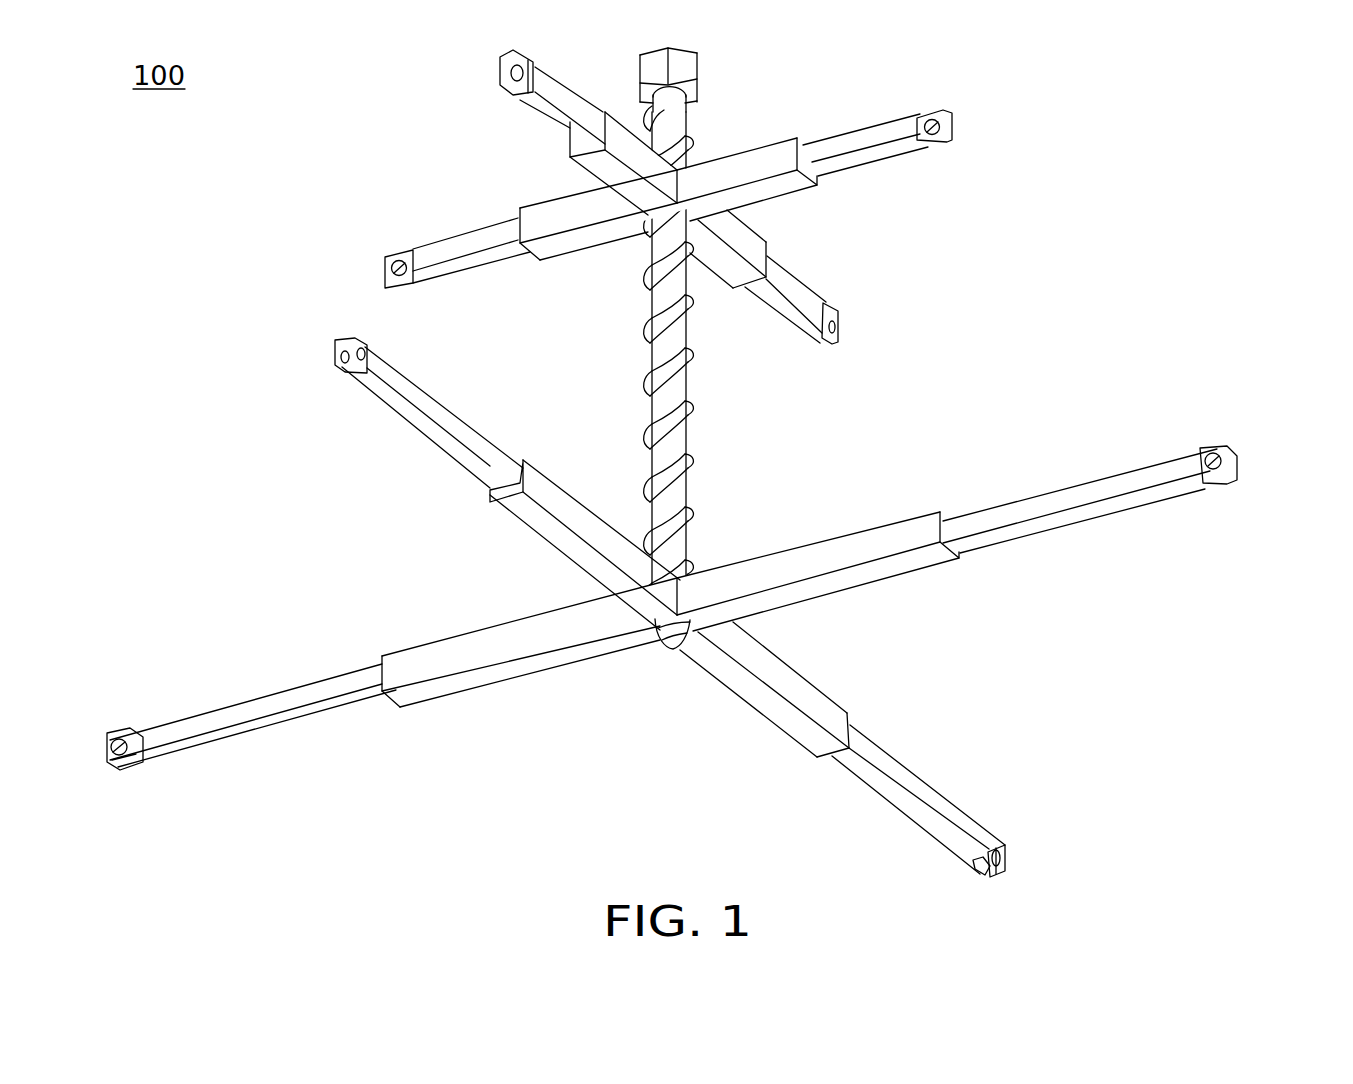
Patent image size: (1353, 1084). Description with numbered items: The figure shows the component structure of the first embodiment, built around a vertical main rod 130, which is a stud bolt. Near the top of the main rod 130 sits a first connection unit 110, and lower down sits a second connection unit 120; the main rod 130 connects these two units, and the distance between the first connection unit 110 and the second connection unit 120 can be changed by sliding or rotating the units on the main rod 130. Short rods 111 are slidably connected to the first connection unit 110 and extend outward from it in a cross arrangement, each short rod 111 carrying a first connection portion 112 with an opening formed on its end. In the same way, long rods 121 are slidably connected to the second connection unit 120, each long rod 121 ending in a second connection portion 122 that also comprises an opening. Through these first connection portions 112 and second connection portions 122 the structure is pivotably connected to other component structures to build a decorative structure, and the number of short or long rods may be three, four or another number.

The first connection unit 110 is at (757, 175).
The short rods 111 is at (863, 147).
The first connection portion 112 is at (947, 123).
The second connection unit 120 is at (883, 535).
The long rods 121 is at (1080, 490).
The second connection portion 122 is at (1217, 450).
The main rod 130 is at (680, 438).